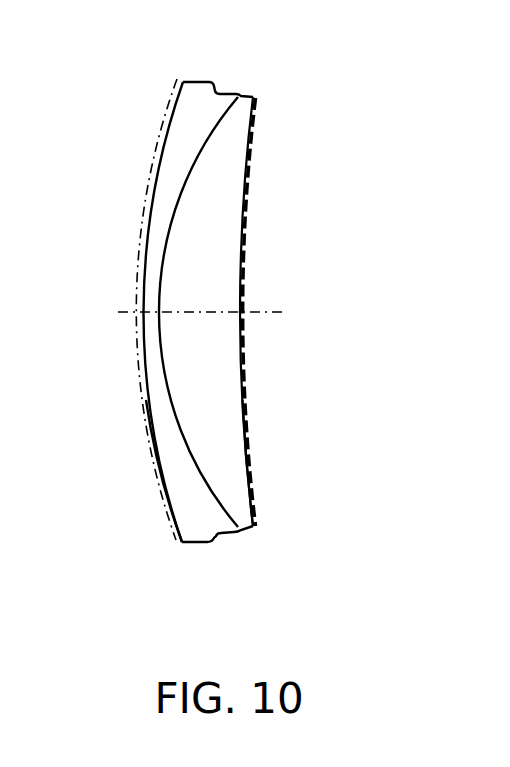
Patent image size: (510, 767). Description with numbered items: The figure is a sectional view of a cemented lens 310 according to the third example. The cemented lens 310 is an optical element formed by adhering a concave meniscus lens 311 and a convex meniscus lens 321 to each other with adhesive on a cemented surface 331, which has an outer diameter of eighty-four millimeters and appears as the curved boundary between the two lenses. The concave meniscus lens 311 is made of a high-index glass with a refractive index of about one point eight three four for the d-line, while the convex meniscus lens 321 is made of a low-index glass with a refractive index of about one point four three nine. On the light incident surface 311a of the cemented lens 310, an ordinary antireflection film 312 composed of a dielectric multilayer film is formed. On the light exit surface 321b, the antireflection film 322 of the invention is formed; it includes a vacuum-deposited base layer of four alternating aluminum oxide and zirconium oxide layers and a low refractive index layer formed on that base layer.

The cemented lens 310 is at (207, 312).
The concave meniscus lens 311 is at (195, 100).
The light incident surface 311a is at (145, 222).
The antireflection film 312 is at (143, 408).
The convex meniscus lens 321 is at (316, 269).
The light exit surface 321b is at (243, 236).
The antireflection film 322 is at (243, 418).
The cemented surface 331 is at (183, 186).